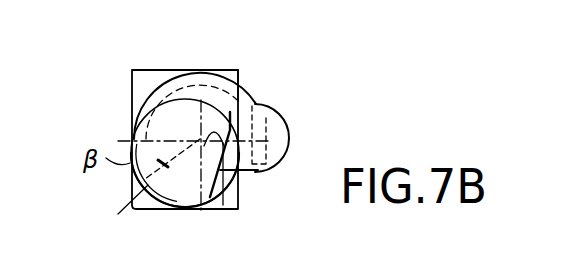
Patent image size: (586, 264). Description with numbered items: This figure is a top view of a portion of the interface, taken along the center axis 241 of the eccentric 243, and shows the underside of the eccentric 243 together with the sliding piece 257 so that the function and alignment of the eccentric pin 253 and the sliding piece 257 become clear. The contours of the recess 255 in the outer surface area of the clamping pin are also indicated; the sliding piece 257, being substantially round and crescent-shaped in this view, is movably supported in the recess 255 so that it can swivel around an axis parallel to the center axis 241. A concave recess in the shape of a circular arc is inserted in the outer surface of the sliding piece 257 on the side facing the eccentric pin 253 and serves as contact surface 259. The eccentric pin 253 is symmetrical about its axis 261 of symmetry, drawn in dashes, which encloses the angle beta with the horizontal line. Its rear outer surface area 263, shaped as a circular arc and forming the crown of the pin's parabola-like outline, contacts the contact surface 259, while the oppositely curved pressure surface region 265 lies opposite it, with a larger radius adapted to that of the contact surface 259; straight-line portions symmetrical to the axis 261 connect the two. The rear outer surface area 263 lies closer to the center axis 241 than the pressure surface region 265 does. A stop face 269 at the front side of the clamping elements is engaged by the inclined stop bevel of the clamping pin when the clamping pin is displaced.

The axis 241 is at (223, 186).
The eccentric 243 is at (238, 96).
The eccentric pin 253 is at (171, 123).
The recess 255 is at (145, 64).
The sliding piece 257 is at (292, 122).
The contact surface 259 is at (265, 174).
The axis of symmetry 261 is at (116, 219).
The rear outer surface area 263 is at (232, 98).
The pressure surface region 265 is at (186, 210).
The stop face 269 is at (190, 71).